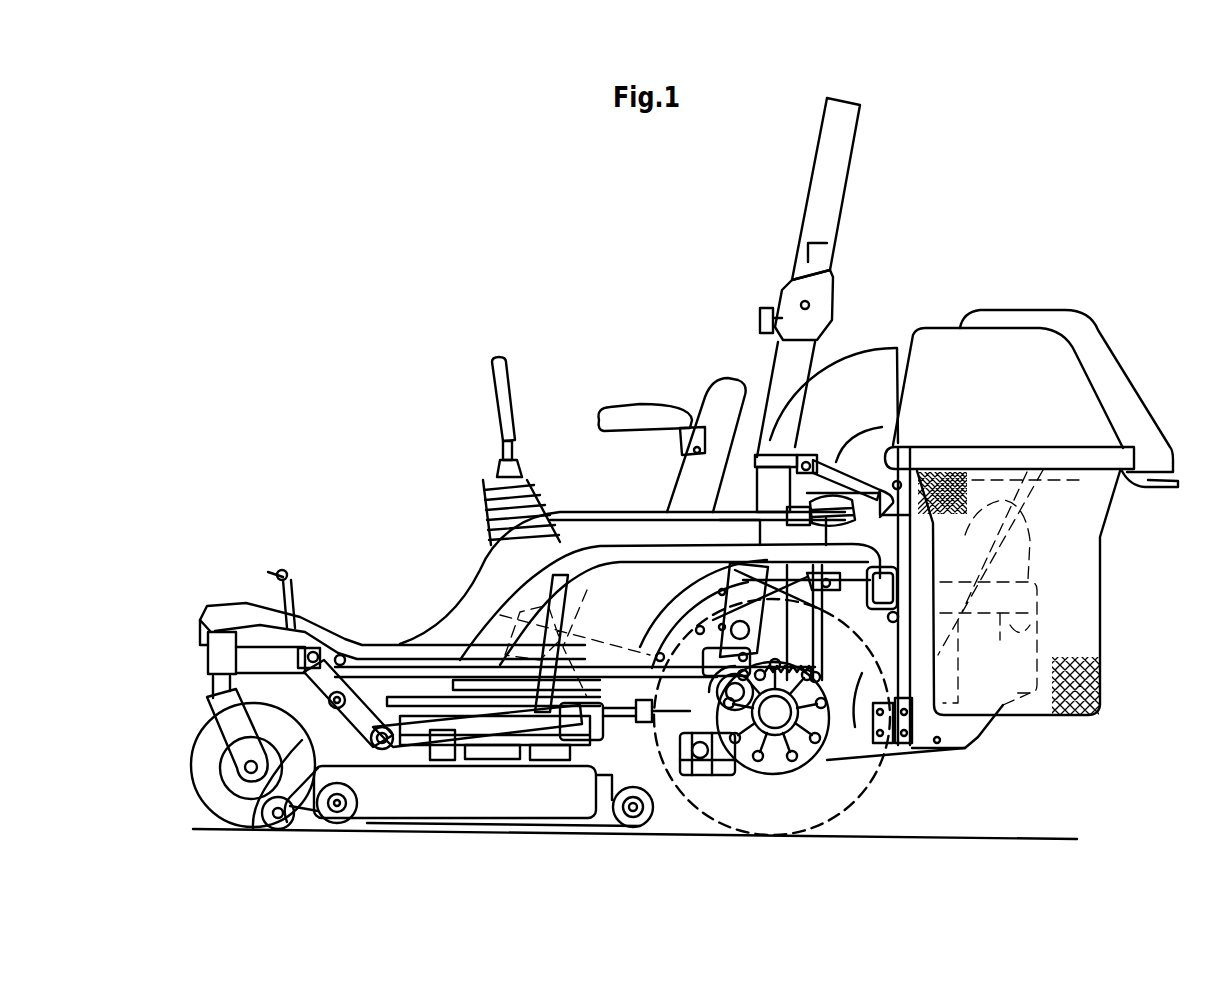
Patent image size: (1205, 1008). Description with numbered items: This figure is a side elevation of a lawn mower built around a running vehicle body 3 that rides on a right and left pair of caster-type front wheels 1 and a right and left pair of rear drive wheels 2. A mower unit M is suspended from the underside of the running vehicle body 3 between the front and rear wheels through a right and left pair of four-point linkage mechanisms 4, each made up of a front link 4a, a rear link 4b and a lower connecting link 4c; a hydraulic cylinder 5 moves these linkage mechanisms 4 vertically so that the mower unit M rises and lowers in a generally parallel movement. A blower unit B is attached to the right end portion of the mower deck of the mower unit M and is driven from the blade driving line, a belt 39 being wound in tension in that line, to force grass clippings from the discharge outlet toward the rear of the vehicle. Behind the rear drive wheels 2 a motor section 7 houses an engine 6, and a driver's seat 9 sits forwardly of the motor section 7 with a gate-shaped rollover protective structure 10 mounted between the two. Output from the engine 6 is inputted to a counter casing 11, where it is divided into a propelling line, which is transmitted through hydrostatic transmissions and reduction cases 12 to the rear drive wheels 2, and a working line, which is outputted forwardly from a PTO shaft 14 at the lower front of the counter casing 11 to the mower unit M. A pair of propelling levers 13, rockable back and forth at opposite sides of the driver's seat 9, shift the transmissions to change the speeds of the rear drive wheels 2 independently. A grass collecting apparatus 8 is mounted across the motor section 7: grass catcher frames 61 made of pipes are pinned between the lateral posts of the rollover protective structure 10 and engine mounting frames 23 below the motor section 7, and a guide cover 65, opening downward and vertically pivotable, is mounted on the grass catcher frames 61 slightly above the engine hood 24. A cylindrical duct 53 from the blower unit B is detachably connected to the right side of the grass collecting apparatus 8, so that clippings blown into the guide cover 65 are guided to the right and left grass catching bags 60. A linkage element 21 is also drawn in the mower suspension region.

The caster-type front wheels 1 is at (200, 778).
The rear drive wheels 2 is at (875, 795).
The running vehicle body 3 is at (344, 636).
The four-point linkage mechanisms 4 is at (349, 722).
The front link 4a is at (345, 665).
The rear link 4b is at (575, 668).
The lower connecting link 4c is at (436, 762).
The hydraulic cylinder 5 is at (590, 632).
The engine 6 is at (862, 688).
The motor section 7 is at (995, 733).
The grass collecting apparatus 8 is at (1069, 298).
The driver's seat 9 is at (713, 398).
The rollover protective structure 10 is at (847, 134).
The counter casing 11 is at (705, 762).
The reduction cases 12 is at (782, 752).
The propelling levers 13 is at (493, 388).
The PTO shaft 14 is at (665, 735).
The link bracket 21 is at (480, 760).
The engine mounting frames 23 is at (912, 755).
The engine hood 24 is at (1020, 501).
The belt 39 is at (548, 752).
The cylindrical duct 53 is at (868, 362).
The grass catching bags 60 is at (1090, 598).
The grass catcher frames 61 is at (893, 641).
The guide cover 65 is at (945, 330).
The blower unit B is at (437, 696).
The mower unit M is at (495, 832).